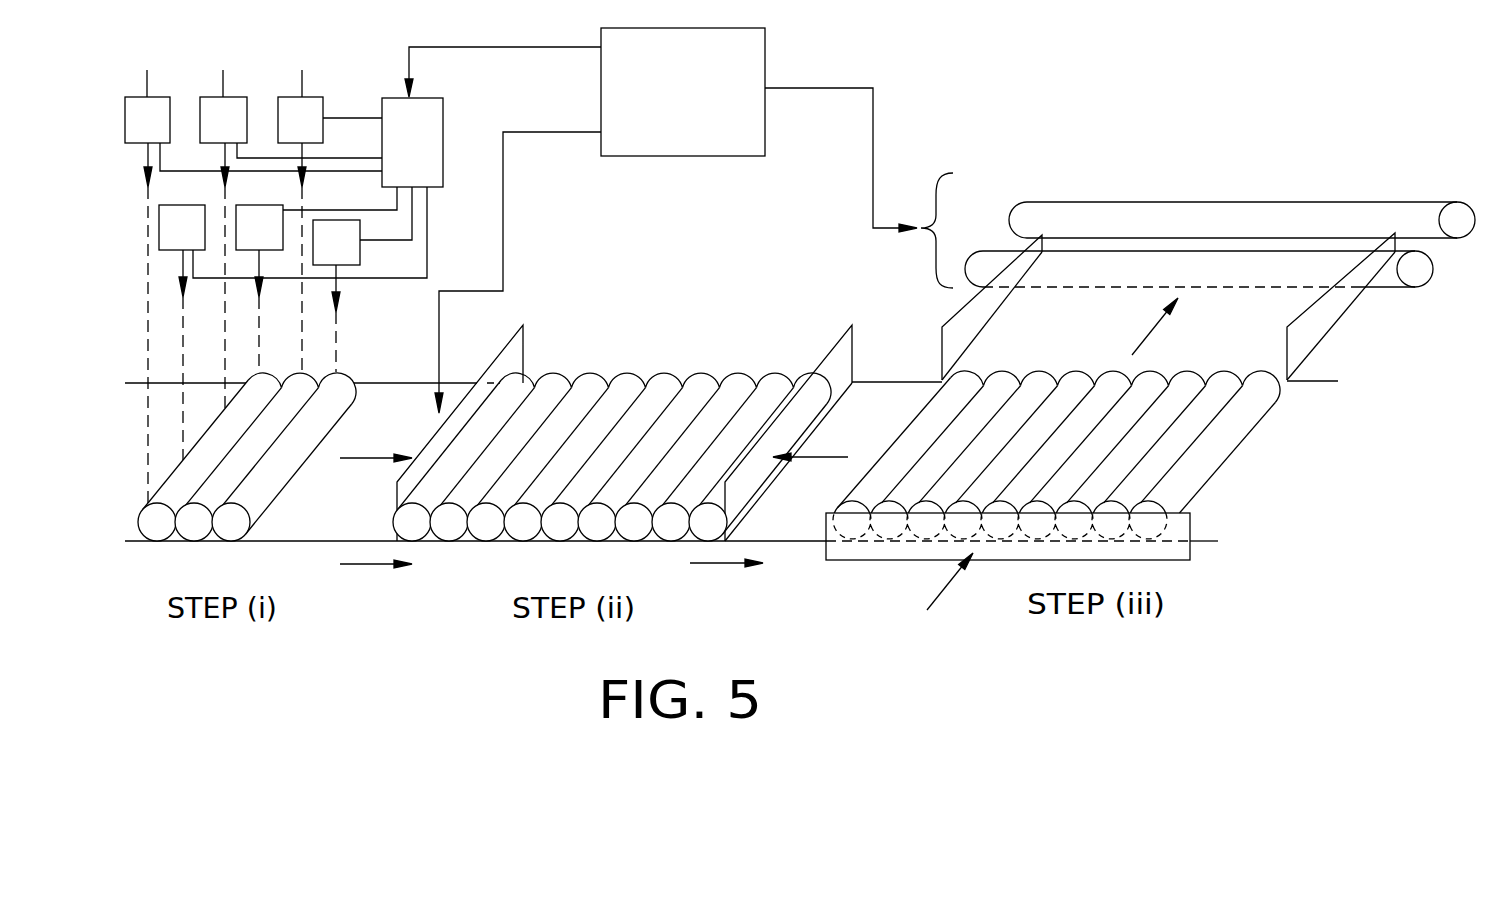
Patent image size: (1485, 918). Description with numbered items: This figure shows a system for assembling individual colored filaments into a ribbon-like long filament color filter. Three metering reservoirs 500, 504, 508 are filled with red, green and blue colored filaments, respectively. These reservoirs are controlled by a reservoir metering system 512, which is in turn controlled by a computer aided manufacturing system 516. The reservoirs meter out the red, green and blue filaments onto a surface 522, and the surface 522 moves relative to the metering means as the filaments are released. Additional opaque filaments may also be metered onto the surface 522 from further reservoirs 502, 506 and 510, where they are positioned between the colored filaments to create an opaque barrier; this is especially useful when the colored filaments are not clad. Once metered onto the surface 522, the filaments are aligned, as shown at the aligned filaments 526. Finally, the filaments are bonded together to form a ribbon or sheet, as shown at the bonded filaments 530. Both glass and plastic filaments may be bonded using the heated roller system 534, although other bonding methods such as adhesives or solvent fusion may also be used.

The metering reservoir 500 is at (156, 94).
The reservoir 502 is at (172, 188).
The metering reservoir 504 is at (235, 94).
The reservoir 506 is at (250, 188).
The metering reservoir 508 is at (314, 94).
The reservoir 510 is at (360, 252).
The reservoir metering system 512 is at (433, 153).
The computer aided manufacturing system 516 is at (697, 123).
The surface 522 is at (357, 517).
The aligned filaments 526 is at (646, 353).
The bonded filaments 530 is at (1252, 489).
The heated roller system 534 is at (1291, 173).